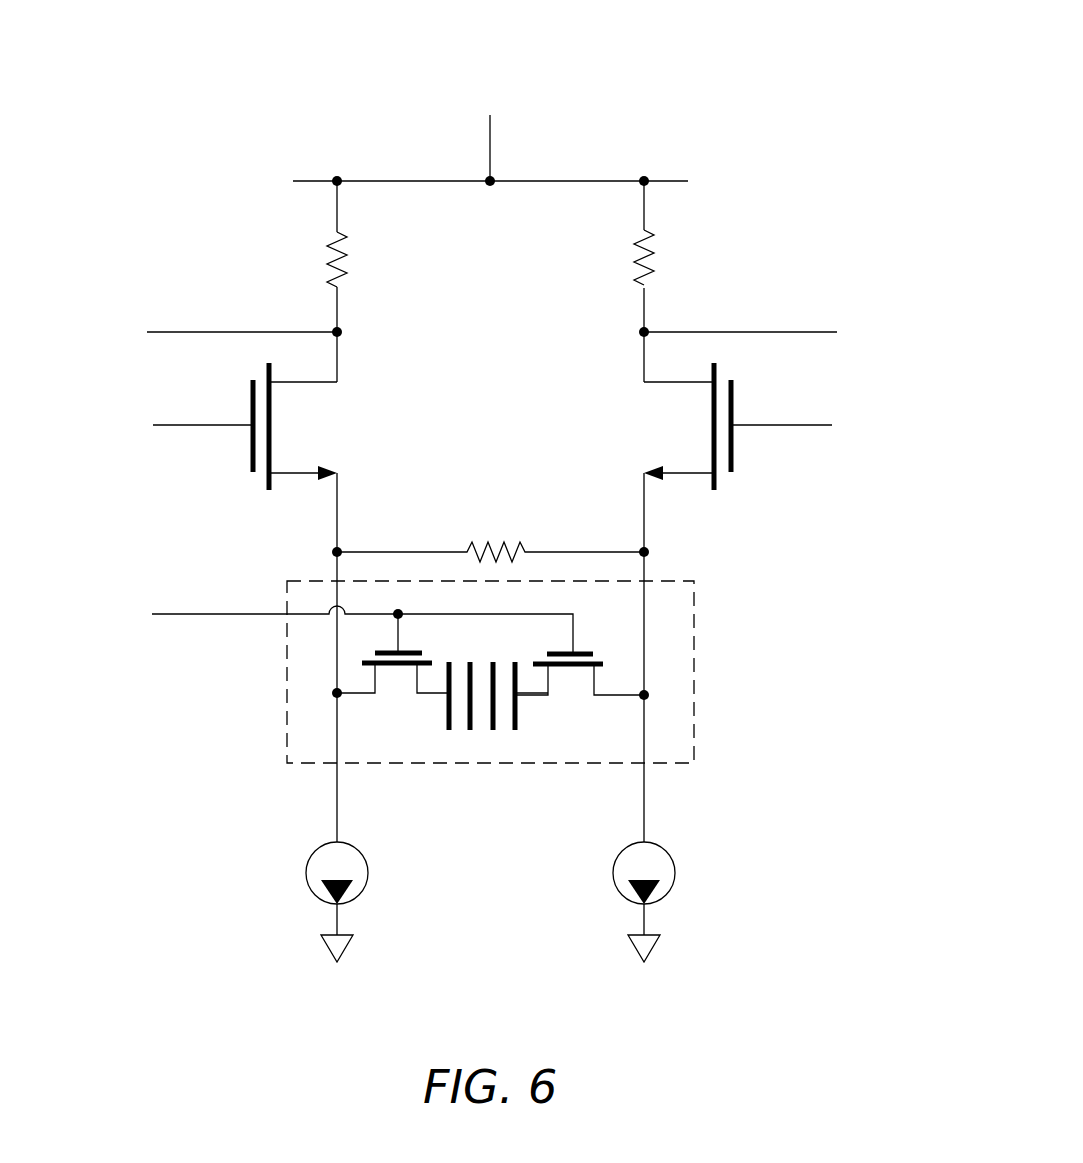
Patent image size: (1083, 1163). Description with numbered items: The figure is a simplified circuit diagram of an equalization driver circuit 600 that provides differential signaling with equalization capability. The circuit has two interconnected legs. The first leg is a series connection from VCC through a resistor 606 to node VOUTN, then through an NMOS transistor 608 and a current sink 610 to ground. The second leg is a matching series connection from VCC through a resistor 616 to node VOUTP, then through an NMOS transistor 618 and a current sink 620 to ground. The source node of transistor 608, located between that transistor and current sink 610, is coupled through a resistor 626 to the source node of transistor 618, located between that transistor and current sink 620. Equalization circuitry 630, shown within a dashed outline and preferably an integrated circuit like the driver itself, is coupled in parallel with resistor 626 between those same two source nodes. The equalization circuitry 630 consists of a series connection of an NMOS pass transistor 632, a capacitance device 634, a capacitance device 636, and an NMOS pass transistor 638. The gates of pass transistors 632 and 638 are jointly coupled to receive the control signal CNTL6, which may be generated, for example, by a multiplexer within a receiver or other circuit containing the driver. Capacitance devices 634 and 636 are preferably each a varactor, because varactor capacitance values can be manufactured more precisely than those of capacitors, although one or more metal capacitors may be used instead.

The equalization driver circuit 600 is at (780, 80).
The resistor 606 is at (347, 244).
The NMOS transistor 608 is at (306, 384).
The current sink 610 is at (368, 864).
The resistor 616 is at (633, 259).
The NMOS transistor 618 is at (656, 385).
The current sink 620 is at (614, 891).
The resistor 626 is at (497, 549).
The equalization circuitry 630 is at (694, 619).
The NMOS pass transistor 632 is at (375, 683).
The capacitance device 634 is at (449, 722).
The capacitance device 636 is at (515, 710).
The NMOS pass transistor 638 is at (594, 683).